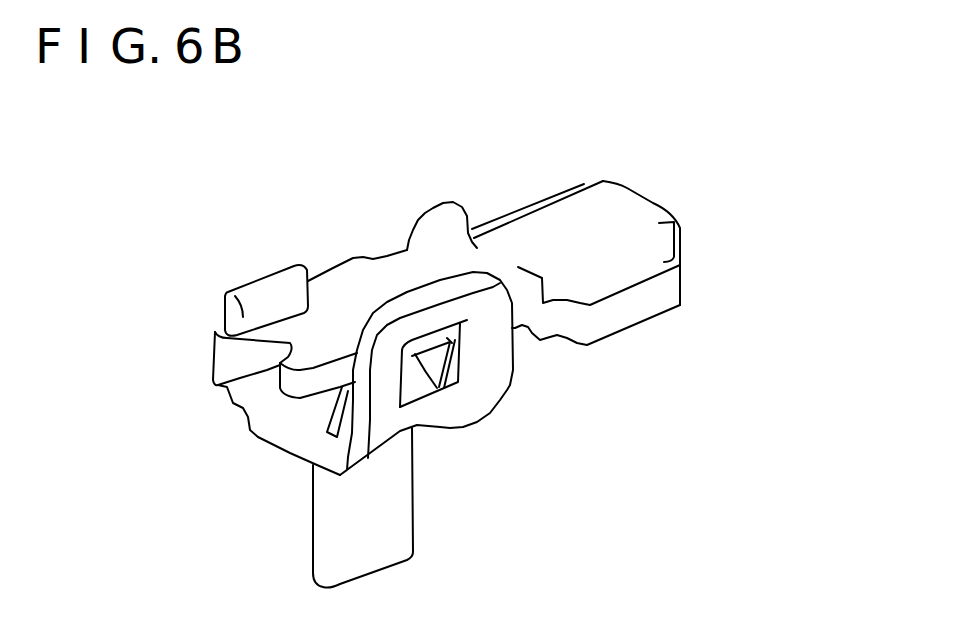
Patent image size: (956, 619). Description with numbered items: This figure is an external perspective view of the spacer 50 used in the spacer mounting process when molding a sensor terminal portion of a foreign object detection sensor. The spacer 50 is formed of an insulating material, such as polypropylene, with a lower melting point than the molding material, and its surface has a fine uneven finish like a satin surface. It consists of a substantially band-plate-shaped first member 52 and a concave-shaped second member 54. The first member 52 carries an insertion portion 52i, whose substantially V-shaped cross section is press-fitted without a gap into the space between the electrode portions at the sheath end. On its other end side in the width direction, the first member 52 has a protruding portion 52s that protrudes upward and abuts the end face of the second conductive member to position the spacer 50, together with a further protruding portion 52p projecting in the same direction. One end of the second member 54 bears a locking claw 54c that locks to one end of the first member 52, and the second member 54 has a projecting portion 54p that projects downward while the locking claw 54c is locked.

The spacer 50 is at (625, 155).
The first member 52 is at (623, 350).
The protruding portion 52s is at (443, 215).
The protruding portion 52p is at (228, 292).
The insertion portion 52i is at (684, 225).
The second member 54 is at (262, 485).
The locking claw 54c is at (383, 307).
The projecting portion 54p is at (393, 506).